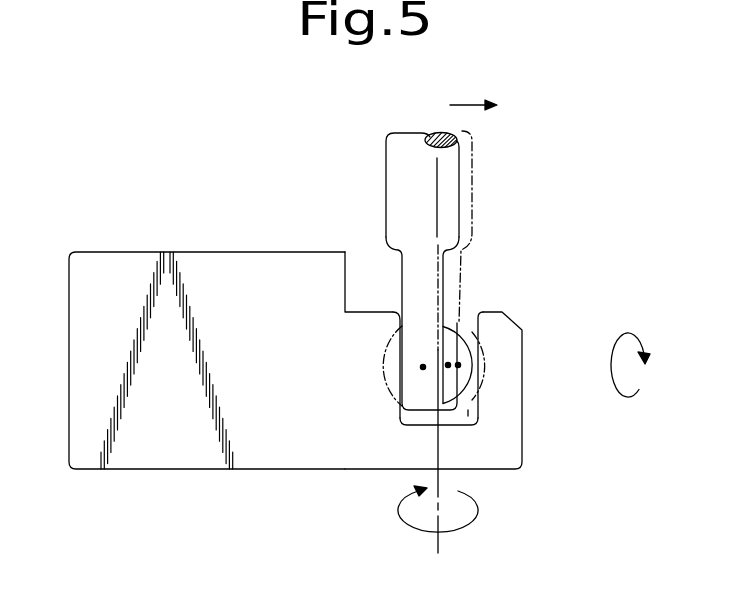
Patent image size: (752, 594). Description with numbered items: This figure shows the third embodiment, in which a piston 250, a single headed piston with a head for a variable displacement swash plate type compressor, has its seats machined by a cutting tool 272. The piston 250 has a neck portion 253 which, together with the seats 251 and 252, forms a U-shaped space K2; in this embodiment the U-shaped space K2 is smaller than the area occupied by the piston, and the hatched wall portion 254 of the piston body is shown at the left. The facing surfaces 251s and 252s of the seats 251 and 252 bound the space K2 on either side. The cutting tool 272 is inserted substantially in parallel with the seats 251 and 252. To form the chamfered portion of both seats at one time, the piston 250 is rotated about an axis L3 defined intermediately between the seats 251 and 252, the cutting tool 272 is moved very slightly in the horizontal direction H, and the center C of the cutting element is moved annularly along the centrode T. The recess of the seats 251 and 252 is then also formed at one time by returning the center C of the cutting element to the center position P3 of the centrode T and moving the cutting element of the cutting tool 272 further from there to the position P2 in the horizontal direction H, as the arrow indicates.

The piston 250 is at (323, 342).
The seat 251 is at (477, 352).
The right slot wall surface 251s is at (477, 312).
The seat 252 is at (393, 337).
The left slot wall surface 252s is at (400, 312).
The neck portion 253 is at (447, 342).
The hatched wall portion of base 254 is at (227, 282).
The cutting tool 272 is at (459, 178).
The center of the cutting element C is at (424, 348).
The position P2 is at (458, 366).
The center position of the centrode P3 is at (448, 366).
The U-shaped space K2 is at (468, 413).
The axis L3 is at (438, 414).
The horizontal direction H is at (473, 89).
The centrode T is at (639, 365).